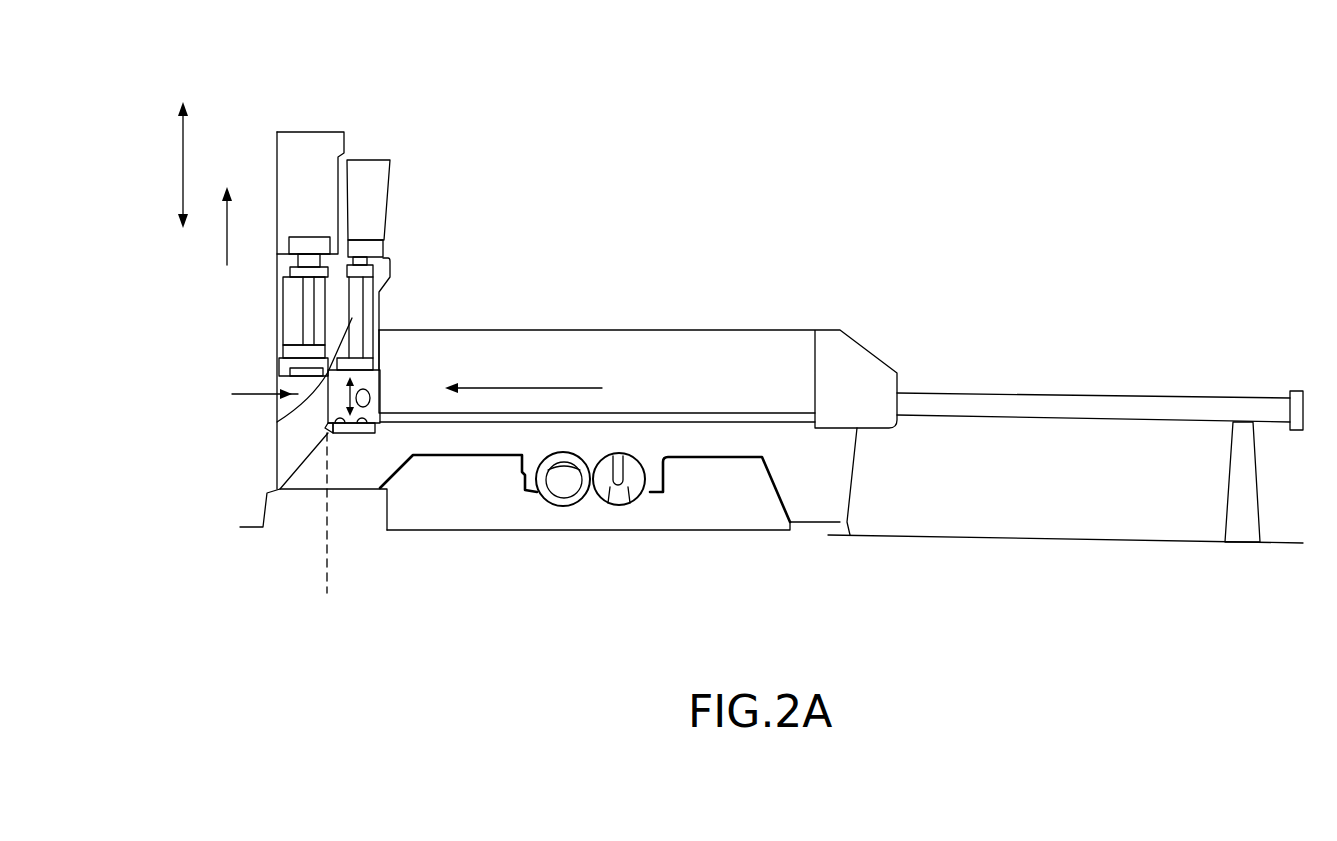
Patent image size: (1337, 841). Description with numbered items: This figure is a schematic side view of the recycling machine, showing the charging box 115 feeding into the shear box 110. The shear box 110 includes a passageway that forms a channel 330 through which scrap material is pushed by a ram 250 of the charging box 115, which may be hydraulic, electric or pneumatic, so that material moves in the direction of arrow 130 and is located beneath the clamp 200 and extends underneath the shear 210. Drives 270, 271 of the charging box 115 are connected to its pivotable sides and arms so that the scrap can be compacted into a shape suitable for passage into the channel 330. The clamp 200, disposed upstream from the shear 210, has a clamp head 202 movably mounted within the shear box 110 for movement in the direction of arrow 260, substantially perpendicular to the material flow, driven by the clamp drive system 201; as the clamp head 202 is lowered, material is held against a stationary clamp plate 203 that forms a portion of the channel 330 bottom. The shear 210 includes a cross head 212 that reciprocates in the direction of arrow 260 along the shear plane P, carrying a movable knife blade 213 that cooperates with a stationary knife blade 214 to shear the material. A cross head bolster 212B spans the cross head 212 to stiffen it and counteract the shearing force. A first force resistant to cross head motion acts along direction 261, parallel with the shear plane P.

The shear 210 is at (295, 132).
The clamp 200 is at (390, 162).
The clamp drive system 201 is at (368, 210).
The shear box 110 is at (390, 267).
The clamp head 202 is at (357, 350).
The cross head 212 is at (302, 333).
The cross head bolster 212B is at (287, 367).
The channel 330 is at (240, 389).
The movable knife blade 213 is at (327, 422).
The stationary knife blade 214 is at (327, 433).
The stationary clamp plate 203 is at (377, 433).
The shear plane P is at (328, 573).
The charging box 115 is at (482, 438).
The drive 271 is at (560, 485).
The drive 270 is at (623, 490).
The arrow indicating scrap material flow direction 130 is at (552, 388).
The ram 250 is at (1035, 405).
The arrow indicating clamp head and cross head movement direction 260 is at (183, 157).
The direction of first force 261 is at (225, 240).